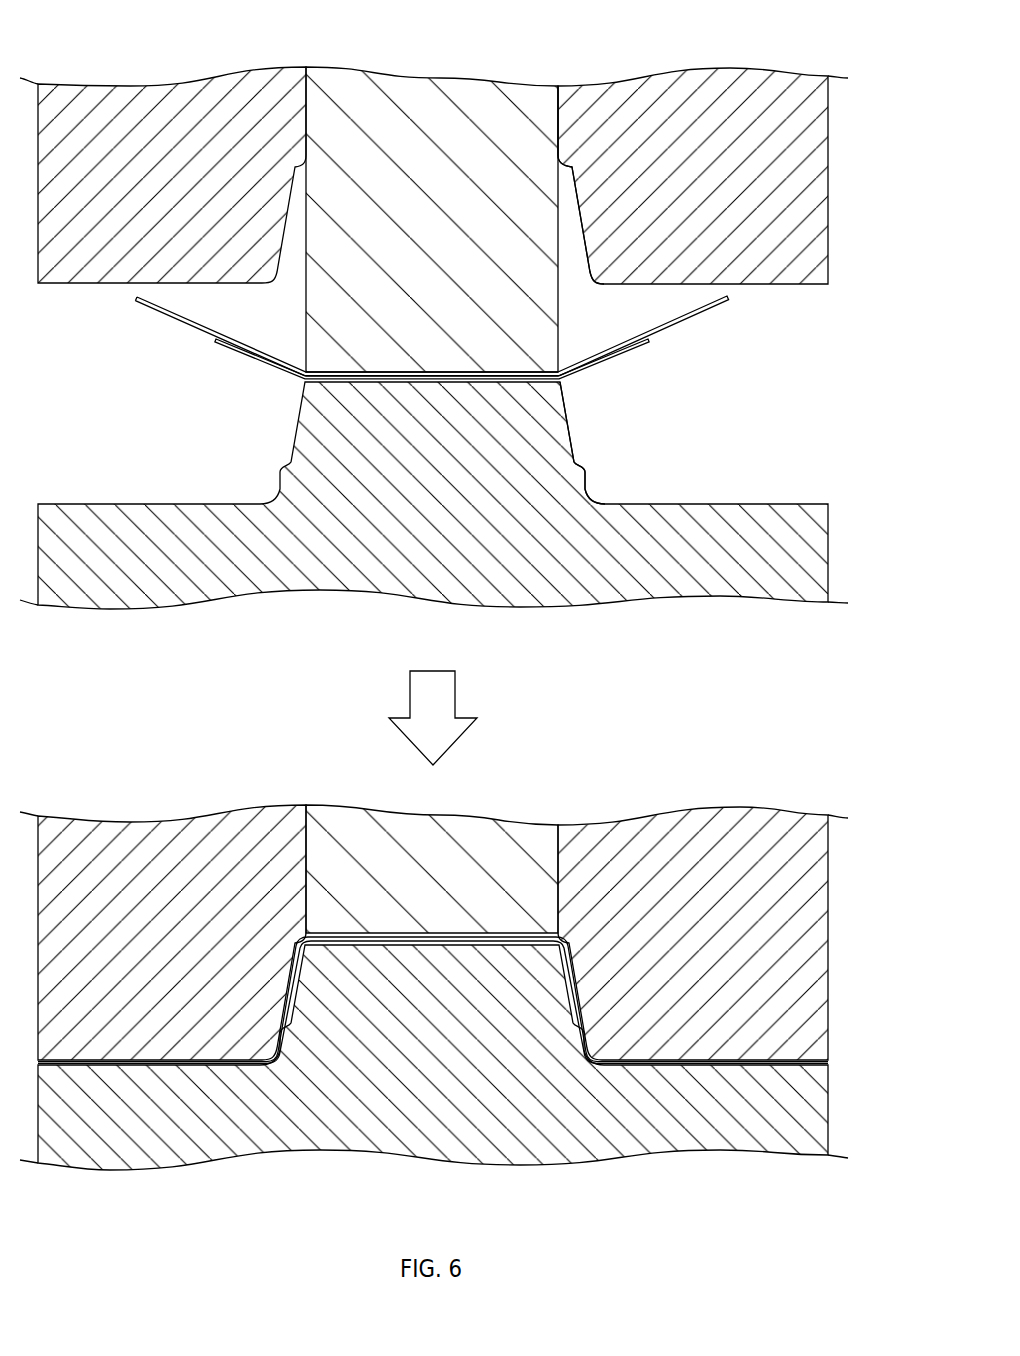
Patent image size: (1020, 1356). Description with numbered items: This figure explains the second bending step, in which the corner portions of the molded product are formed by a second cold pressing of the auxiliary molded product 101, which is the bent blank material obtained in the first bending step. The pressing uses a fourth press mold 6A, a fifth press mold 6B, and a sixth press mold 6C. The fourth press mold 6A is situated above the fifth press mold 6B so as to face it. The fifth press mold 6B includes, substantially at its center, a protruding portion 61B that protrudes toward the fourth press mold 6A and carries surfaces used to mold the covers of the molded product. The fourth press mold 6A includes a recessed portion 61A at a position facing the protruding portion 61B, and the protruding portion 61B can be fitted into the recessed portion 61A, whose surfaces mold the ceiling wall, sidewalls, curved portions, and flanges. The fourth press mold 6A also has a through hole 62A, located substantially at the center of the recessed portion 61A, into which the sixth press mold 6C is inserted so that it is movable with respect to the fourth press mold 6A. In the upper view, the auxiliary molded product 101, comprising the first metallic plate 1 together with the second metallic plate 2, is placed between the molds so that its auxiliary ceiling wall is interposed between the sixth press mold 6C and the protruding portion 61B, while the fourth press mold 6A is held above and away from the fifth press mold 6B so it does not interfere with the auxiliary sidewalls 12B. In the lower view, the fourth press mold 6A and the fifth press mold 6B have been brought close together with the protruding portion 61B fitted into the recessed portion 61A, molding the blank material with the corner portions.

The first metallic plate 1 is at (433, 679).
The second metallic plate 2 is at (252, 370).
The fourth press mold 6A is at (828, 170).
The fifth press mold 6B is at (828, 545).
The sixth press mold 6C is at (560, 118).
The recessed portion 61A is at (572, 243).
The protruding portion 61B is at (578, 435).
The through hole 62A is at (550, 141).
The auxiliary molded product 101 is at (460, 679).
The auxiliary sidewall 12B is at (697, 317).